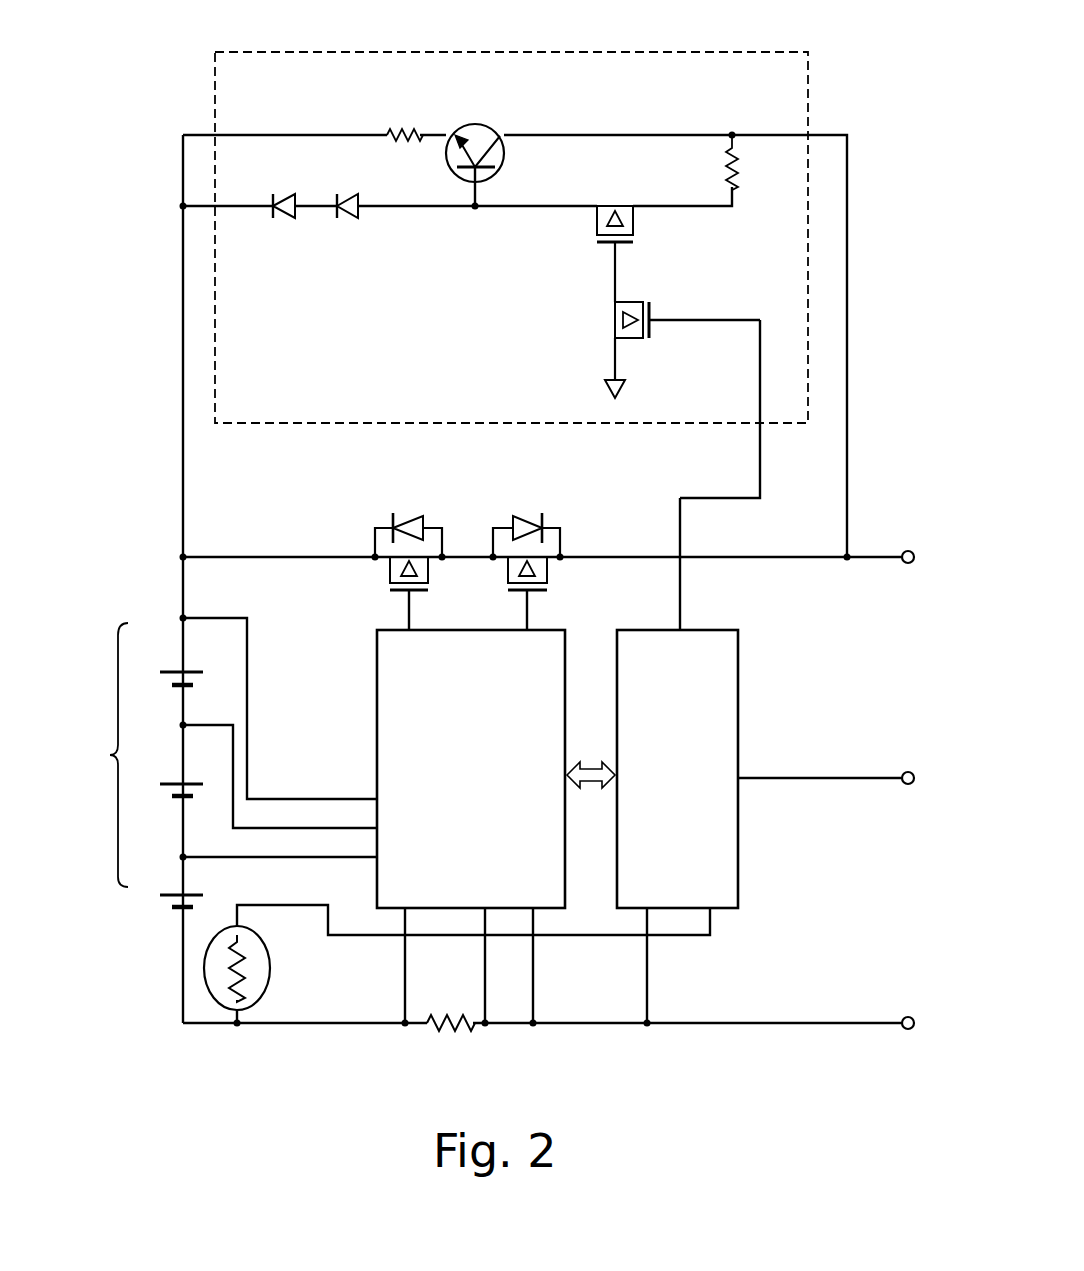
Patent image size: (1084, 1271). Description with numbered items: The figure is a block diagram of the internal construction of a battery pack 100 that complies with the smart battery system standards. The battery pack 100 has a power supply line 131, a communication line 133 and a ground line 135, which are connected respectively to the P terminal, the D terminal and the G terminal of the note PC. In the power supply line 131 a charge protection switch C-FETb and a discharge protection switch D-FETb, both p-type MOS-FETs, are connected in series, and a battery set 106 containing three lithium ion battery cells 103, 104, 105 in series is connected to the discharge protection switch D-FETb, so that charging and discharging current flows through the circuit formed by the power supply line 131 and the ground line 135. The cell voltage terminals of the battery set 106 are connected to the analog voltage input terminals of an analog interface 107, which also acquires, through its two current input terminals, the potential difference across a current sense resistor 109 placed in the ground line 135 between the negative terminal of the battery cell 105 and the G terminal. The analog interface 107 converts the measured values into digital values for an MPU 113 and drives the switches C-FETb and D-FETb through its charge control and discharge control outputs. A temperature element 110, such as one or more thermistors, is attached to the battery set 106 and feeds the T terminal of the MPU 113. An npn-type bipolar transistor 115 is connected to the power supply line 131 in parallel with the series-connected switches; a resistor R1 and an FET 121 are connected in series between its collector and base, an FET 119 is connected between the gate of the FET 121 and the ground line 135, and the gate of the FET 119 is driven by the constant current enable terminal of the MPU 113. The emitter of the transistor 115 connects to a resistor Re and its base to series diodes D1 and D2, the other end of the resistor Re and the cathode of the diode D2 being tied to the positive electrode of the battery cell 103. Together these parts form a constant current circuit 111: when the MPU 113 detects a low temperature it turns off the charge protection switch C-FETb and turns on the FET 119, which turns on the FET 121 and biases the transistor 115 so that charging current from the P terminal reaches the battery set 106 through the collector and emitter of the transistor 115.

The battery pack 100 is at (146, 230).
The temperature element 110 is at (662, 52).
The transistor 115 is at (487, 130).
The FET 121 is at (628, 245).
The FET 119 is at (650, 340).
The battery cell 103 is at (172, 672).
The battery cell 104 is at (172, 784).
The battery cell 105 is at (172, 895).
The battery set 106 is at (95, 755).
The analog interface 107 is at (556, 630).
The MPU 113 is at (724, 630).
The current sense resistor 109 is at (445, 1028).
The constant current circuit 111 is at (270, 968).
The power supply line 131 is at (770, 557).
The communication line 133 is at (802, 778).
The ground line 135 is at (802, 1023).
The resistor Re is at (410, 130).
The resistor R1 is at (742, 190).
The diode D1 is at (352, 216).
The diode D2 is at (292, 216).
The discharge protection switch D-FETb is at (413, 516).
The charge protection switch C-FETb is at (540, 497).